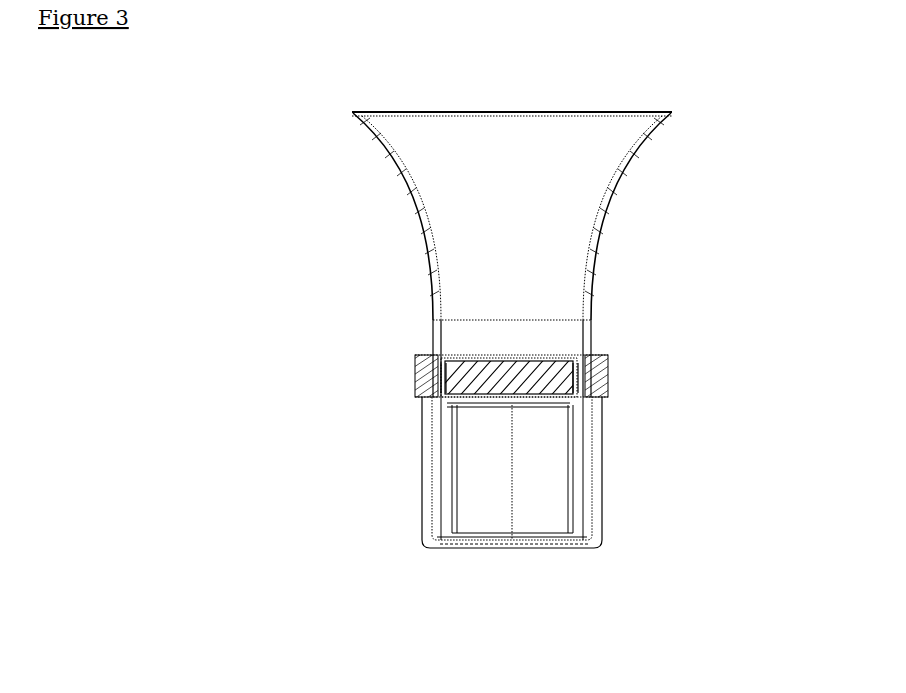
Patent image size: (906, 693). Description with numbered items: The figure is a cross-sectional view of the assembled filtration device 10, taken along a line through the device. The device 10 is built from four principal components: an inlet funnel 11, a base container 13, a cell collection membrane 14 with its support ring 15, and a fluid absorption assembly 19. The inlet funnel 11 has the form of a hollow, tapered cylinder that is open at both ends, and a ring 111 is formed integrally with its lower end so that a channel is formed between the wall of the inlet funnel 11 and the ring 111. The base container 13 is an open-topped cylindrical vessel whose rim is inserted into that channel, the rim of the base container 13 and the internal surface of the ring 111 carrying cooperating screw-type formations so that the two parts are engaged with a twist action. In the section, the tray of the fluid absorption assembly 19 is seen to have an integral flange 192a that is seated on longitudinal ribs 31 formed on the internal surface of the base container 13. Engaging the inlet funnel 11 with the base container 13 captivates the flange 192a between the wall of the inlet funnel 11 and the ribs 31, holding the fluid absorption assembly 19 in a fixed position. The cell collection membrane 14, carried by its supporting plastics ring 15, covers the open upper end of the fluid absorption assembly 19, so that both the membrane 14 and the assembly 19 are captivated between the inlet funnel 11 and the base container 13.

The filtration device 10 is at (290, 240).
The inlet funnel 11 is at (567, 165).
The ring 111 is at (397, 385).
The support ring 15 is at (430, 360).
The cell collection membrane 14 is at (530, 357).
The fluid absorption assembly 19 is at (557, 380).
The flange 192a is at (568, 390).
The longitudinal ribs 31 is at (568, 510).
The base container 13 is at (518, 542).